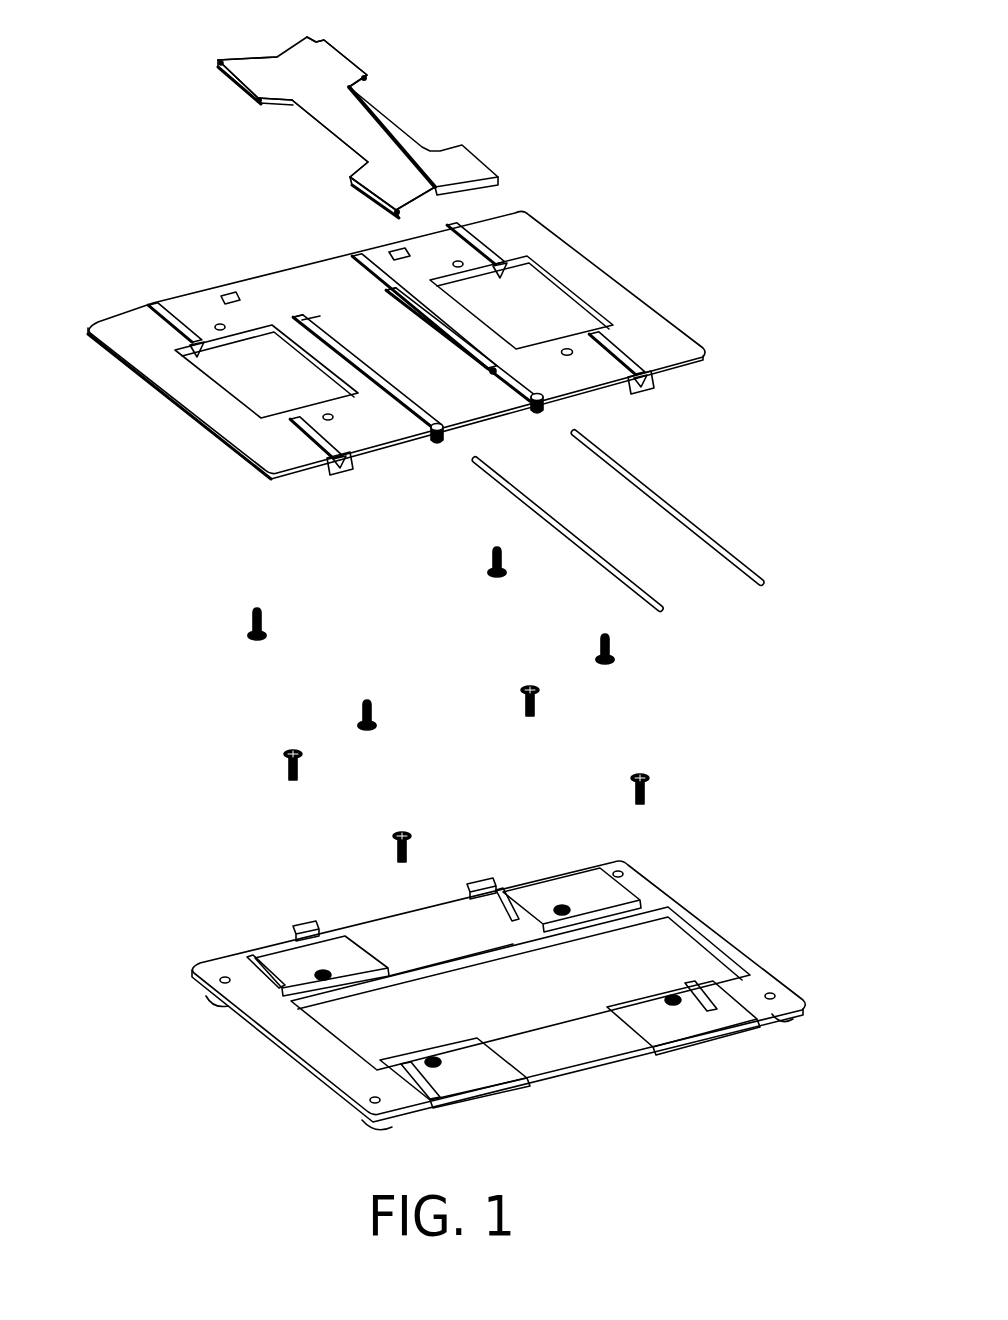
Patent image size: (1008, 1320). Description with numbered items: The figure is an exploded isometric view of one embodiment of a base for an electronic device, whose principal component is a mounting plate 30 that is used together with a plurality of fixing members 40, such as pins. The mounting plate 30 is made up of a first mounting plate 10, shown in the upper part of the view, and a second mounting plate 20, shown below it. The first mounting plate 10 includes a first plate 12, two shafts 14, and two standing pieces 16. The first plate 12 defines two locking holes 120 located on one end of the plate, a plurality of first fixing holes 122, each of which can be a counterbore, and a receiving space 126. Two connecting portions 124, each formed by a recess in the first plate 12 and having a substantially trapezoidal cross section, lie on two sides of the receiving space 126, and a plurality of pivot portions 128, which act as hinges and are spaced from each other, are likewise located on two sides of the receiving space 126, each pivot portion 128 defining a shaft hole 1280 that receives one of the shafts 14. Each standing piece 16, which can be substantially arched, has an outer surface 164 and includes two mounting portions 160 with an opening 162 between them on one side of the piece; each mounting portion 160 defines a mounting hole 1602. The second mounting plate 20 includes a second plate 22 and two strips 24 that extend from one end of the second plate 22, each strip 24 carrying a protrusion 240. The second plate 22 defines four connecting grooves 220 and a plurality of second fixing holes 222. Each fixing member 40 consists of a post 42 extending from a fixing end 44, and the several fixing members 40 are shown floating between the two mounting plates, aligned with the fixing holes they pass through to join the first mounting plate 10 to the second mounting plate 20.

The first mounting plate 10 is at (529, 76).
The first plate 12 is at (117, 318).
The shafts 14 is at (673, 495).
The standing pieces 16 is at (457, 112).
The second mounting plate 20 is at (716, 893).
The second plate 22 is at (212, 968).
The strips 24 is at (473, 882).
The mounting plate 30 is at (704, 180).
The fixing members 40 is at (188, 665).
The post 42 is at (248, 620).
The fixing end 44 is at (249, 646).
The locking holes 120 is at (223, 297).
The first fixing holes 122 is at (580, 355).
The connecting portions 124 is at (332, 475).
The receiving space 126 is at (315, 272).
The pivot portions 128 is at (487, 430).
The shaft hole 1280 is at (437, 441).
The mounting portions 160 is at (229, 88).
The opening 162 is at (327, 141).
The outer surface 164 is at (335, 55).
The mounting hole 1602 is at (258, 102).
The connecting grooves 220 is at (265, 960).
The second fixing holes 222 is at (560, 908).
The protrusion 240 is at (502, 897).